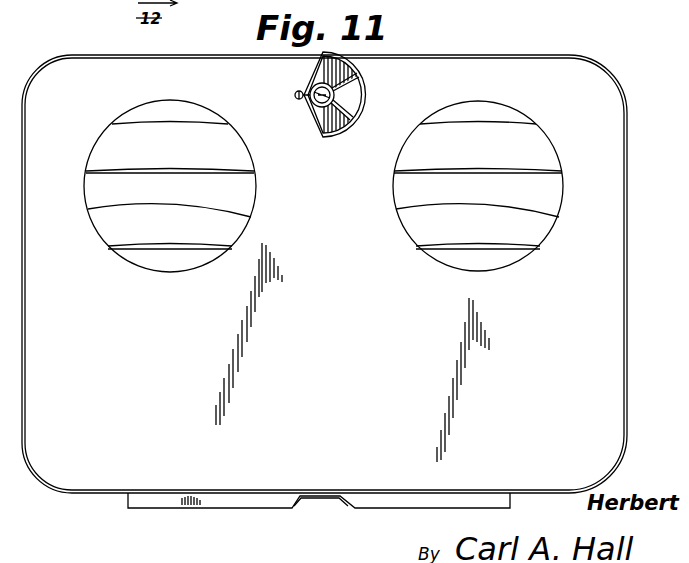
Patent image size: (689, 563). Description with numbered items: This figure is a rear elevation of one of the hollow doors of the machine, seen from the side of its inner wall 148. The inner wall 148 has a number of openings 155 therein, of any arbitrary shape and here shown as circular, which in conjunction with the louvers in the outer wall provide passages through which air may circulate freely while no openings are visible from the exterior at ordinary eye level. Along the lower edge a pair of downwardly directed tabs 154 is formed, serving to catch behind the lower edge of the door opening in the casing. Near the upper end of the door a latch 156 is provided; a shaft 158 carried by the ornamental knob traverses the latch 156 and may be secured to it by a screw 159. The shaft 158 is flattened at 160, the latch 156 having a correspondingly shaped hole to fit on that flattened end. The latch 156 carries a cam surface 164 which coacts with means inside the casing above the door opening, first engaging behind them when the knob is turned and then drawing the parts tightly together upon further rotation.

The inner wall 148 is at (611, 355).
The downwardly directed tabs 154 is at (278, 500).
The openings 155 is at (96, 149).
The latch 156 is at (356, 97).
The shaft 158 is at (340, 88).
The screw 159 is at (304, 95).
The flattened portion of shaft 160 is at (317, 99).
The cam surface 164 is at (347, 51).